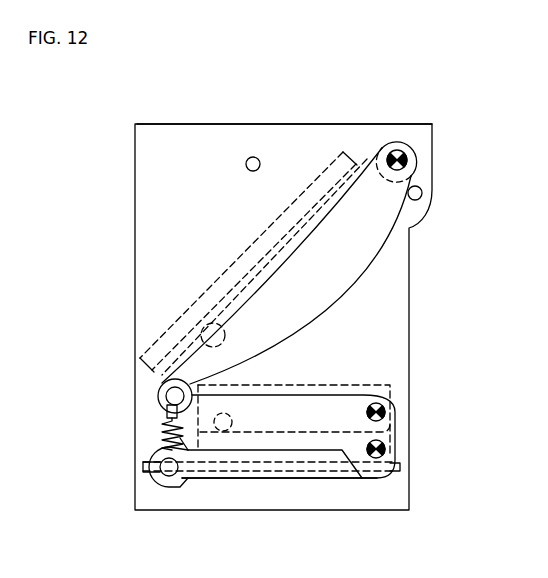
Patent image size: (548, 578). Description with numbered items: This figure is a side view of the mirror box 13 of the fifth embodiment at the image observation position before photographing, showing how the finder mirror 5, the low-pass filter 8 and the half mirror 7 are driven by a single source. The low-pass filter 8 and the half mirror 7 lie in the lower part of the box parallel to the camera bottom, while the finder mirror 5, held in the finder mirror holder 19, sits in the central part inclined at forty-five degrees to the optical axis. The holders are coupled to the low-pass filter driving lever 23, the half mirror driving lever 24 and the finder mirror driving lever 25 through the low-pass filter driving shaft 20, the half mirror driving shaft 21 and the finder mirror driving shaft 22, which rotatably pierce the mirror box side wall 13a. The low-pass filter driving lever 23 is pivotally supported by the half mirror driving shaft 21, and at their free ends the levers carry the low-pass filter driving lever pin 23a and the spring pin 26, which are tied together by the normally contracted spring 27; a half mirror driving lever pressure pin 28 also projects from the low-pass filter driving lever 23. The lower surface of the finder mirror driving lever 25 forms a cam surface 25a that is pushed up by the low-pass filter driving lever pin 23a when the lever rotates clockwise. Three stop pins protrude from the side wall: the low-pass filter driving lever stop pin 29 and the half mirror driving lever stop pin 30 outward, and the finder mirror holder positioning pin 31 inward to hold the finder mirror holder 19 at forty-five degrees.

The mirror box 13 is at (145, 148).
The mirror box side wall 13a is at (167, 122).
The half mirror driving lever stop pin 30 is at (252, 157).
The finder mirror 5 is at (333, 172).
The finder mirror holder 19 is at (372, 142).
The finder mirror driving shaft 22 is at (405, 158).
The low-pass filter driving lever stop pin 29 is at (423, 192).
The finder mirror driving lever 25 is at (373, 219).
The cam surface 25a is at (307, 307).
The finder mirror holder positioning pin 31 is at (203, 334).
The low-pass filter 8 is at (355, 387).
The low-pass filter driving shaft 20 is at (386, 412).
The half mirror driving shaft 21 is at (386, 450).
The low-pass filter driving lever 23 is at (272, 430).
The low-pass filter driving lever pin 23a is at (160, 408).
The spring 27 is at (143, 467).
The spring pin 26 is at (170, 484).
The half mirror driving lever pressure pin 28 is at (217, 432).
The half mirror 7 is at (307, 470).
The half mirror driving lever 24 is at (340, 480).